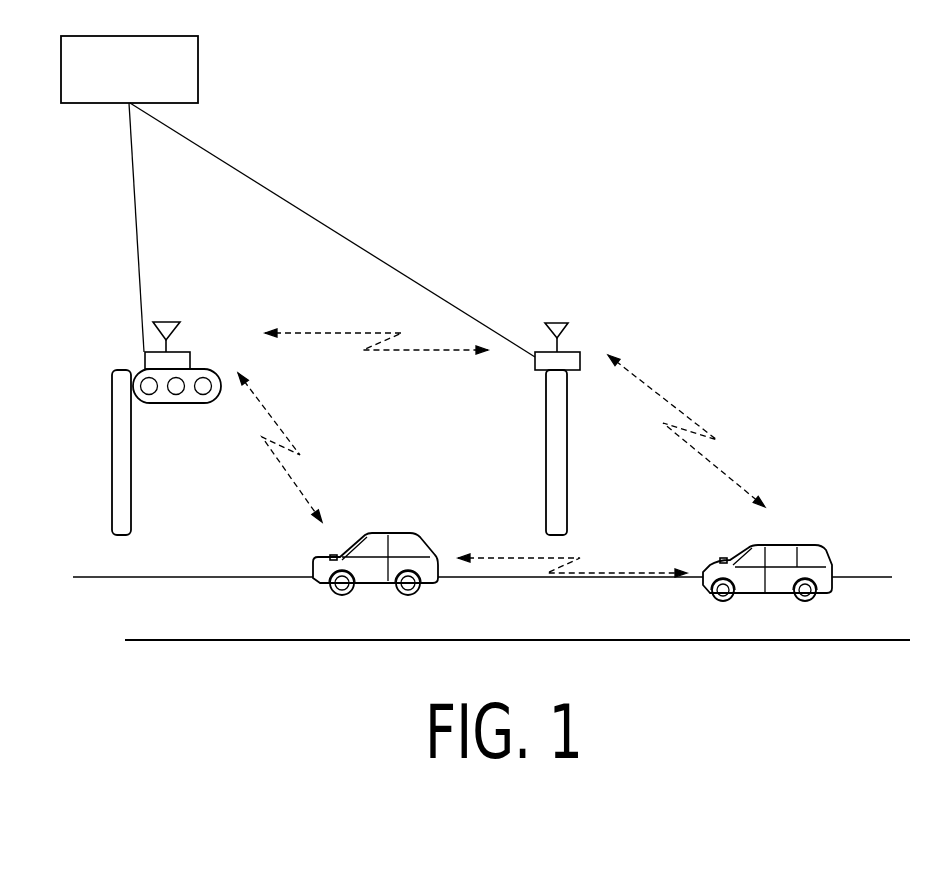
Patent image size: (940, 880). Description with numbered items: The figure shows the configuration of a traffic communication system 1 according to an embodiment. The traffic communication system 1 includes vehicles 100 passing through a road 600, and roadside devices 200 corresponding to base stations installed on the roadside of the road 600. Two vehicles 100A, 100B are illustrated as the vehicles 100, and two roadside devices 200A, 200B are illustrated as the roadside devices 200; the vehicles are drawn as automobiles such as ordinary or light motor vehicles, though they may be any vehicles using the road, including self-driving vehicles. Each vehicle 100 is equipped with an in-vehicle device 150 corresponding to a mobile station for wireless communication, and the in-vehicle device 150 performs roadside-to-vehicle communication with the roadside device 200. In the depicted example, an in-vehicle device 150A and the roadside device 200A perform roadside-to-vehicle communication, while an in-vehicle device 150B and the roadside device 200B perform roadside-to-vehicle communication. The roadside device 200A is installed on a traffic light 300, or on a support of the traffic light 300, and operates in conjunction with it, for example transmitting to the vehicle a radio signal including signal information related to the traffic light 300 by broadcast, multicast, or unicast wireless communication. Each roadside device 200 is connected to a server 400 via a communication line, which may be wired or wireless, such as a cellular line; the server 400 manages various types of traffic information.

The traffic communication system 1 is at (678, 160).
The vehicle 100 is at (610, 549).
The vehicle 100A is at (405, 533).
The vehicle 100B is at (795, 545).
The in-vehicle device 150 is at (538, 517).
The in-vehicle device 150A is at (334, 545).
The in-vehicle device 150B is at (718, 560).
The roadside device 200 is at (417, 414).
The roadside device 200A is at (181, 351).
The roadside device 200B is at (578, 352).
The traffic light 300 is at (173, 404).
The server 400 is at (199, 71).
The road 600 is at (145, 576).